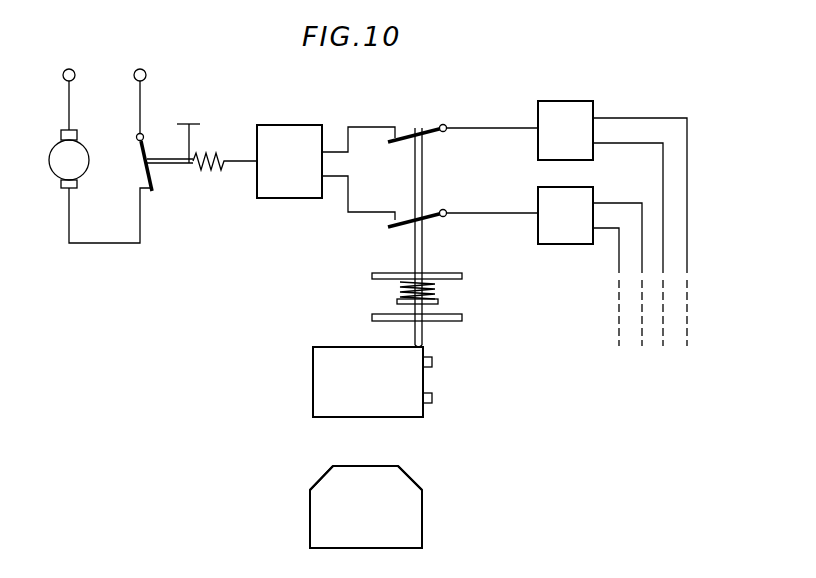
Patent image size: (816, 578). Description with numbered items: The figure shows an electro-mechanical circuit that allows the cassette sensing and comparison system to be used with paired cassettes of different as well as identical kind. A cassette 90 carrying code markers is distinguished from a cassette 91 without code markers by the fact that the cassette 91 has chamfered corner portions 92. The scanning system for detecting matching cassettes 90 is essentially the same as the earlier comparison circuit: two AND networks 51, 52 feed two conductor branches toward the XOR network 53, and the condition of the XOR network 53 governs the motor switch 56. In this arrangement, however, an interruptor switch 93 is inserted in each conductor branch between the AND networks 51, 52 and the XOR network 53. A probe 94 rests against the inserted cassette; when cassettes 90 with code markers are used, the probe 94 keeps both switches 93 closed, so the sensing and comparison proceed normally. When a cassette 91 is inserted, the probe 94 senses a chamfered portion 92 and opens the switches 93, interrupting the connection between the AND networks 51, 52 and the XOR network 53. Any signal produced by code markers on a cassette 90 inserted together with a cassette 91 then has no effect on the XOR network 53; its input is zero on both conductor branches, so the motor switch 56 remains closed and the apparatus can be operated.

The motor switch 56 is at (145, 173).
The XOR network 53 is at (300, 175).
The interruptor switch 93 is at (405, 143).
The AND network 51 is at (576, 143).
The AND network 52 is at (575, 228).
The probe 94 is at (418, 332).
The cassette with code markers 90 is at (362, 393).
The cassette 91 is at (363, 527).
The chamfered corner portions 92 is at (323, 476).